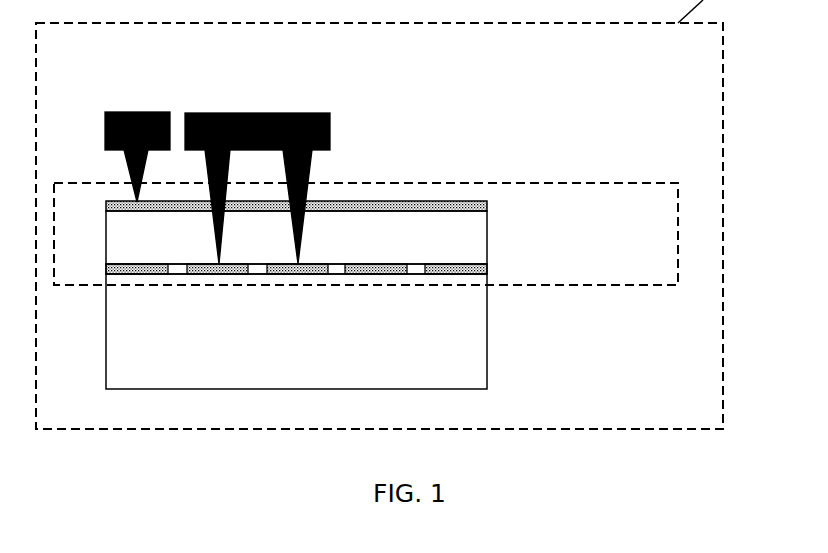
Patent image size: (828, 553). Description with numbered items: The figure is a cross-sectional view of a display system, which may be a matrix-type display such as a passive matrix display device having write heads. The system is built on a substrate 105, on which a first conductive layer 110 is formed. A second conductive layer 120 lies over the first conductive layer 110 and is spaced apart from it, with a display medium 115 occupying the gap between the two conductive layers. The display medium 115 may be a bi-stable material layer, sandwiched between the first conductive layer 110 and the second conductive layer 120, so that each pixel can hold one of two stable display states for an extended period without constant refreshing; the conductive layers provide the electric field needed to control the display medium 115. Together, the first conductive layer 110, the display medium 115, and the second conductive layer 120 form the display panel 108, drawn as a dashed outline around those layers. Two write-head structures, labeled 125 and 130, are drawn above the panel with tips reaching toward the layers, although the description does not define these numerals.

The substrate 105 is at (460, 336).
The display panel 108 is at (660, 183).
The first conductive layer 110 is at (487, 273).
The display medium 115 is at (460, 229).
The second conductive layer 120 is at (487, 211).
The dual-tip probe 125 is at (257, 113).
The single-tip probe 130 is at (132, 112).